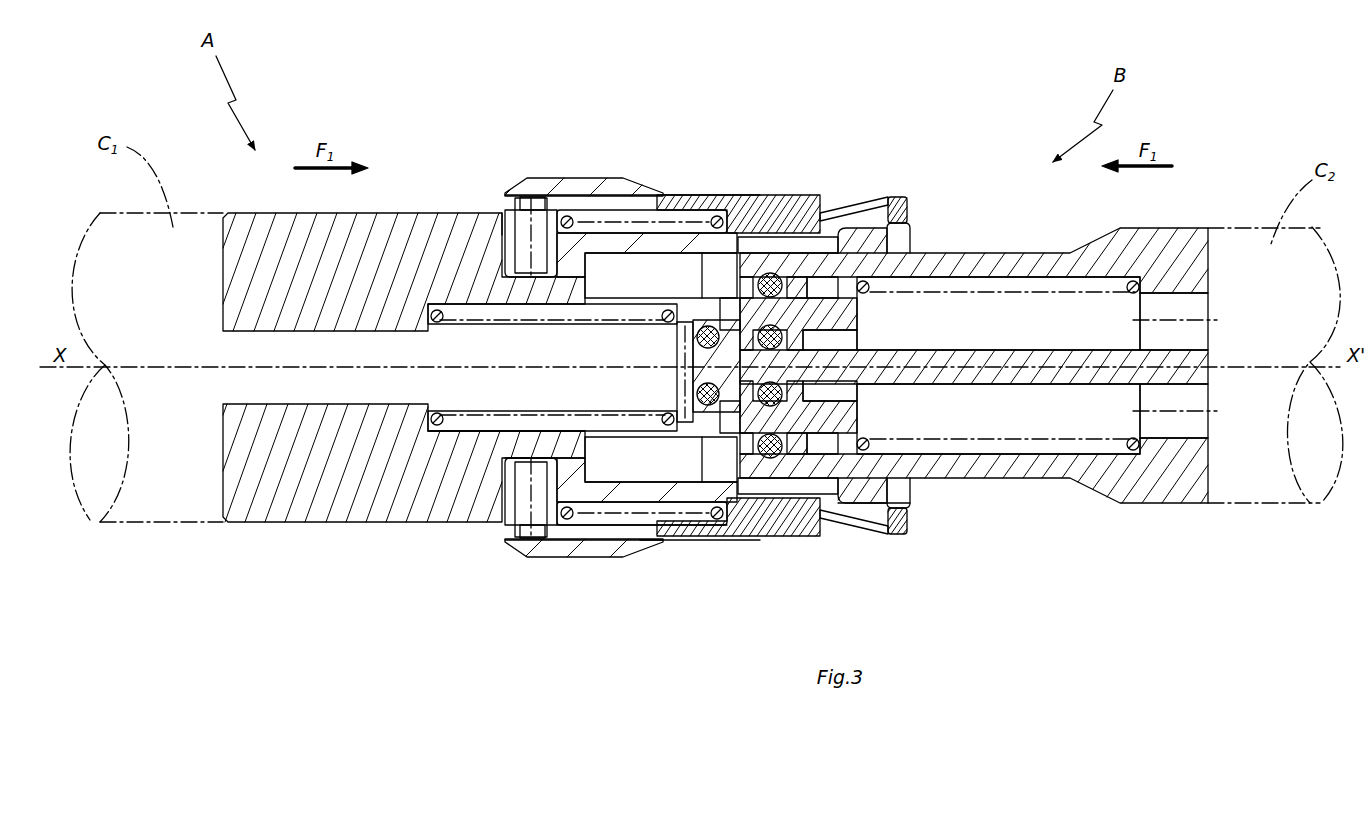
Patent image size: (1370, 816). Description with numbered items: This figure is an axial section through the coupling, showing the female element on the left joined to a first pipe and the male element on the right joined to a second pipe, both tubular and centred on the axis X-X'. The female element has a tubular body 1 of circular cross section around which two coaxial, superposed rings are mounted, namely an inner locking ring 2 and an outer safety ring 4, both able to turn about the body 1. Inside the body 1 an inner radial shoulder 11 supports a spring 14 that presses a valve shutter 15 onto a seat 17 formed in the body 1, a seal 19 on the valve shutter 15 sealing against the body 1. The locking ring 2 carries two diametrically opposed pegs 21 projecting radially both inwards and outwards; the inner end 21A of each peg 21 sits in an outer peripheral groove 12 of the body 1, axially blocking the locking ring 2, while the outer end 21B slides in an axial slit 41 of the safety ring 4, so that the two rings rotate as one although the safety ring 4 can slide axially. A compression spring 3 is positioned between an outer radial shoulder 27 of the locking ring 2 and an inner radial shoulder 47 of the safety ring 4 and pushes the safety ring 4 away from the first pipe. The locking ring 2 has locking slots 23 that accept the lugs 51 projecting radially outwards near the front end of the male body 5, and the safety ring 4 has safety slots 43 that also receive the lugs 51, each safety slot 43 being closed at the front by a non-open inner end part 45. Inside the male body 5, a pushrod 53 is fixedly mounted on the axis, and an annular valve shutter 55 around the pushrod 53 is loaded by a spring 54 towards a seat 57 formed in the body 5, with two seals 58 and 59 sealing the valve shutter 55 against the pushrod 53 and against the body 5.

The body 1 is at (282, 500).
The inner locking ring 2 is at (600, 217).
The compression spring 3 is at (613, 520).
The outer safety ring 4 is at (907, 523).
The body 5 is at (1165, 245).
The inner radial shoulder 11 is at (443, 445).
The outer peripheral groove 12 is at (507, 205).
The spring 14 is at (455, 305).
The valve shutter 15 is at (650, 523).
The seat 17 is at (687, 417).
The seal 19 is at (703, 326).
The peg 21 is at (522, 480).
The inner end 21A is at (588, 287).
The outer end 21B is at (531, 200).
The locking slot 23 is at (823, 216).
The outer radial shoulder 27 is at (570, 520).
The axial slit 41 is at (557, 198).
The safety slot 43 is at (877, 503).
The non-open inner end part 45 is at (903, 222).
The inner radial shoulder 47 is at (708, 412).
The lug 51 is at (887, 226).
The pushrod 53 is at (1005, 348).
The spring 54 is at (1100, 440).
The annular valve shutter 55 is at (800, 440).
The seat 57 is at (832, 432).
The seal 58 is at (740, 470).
The seal 59 is at (737, 215).